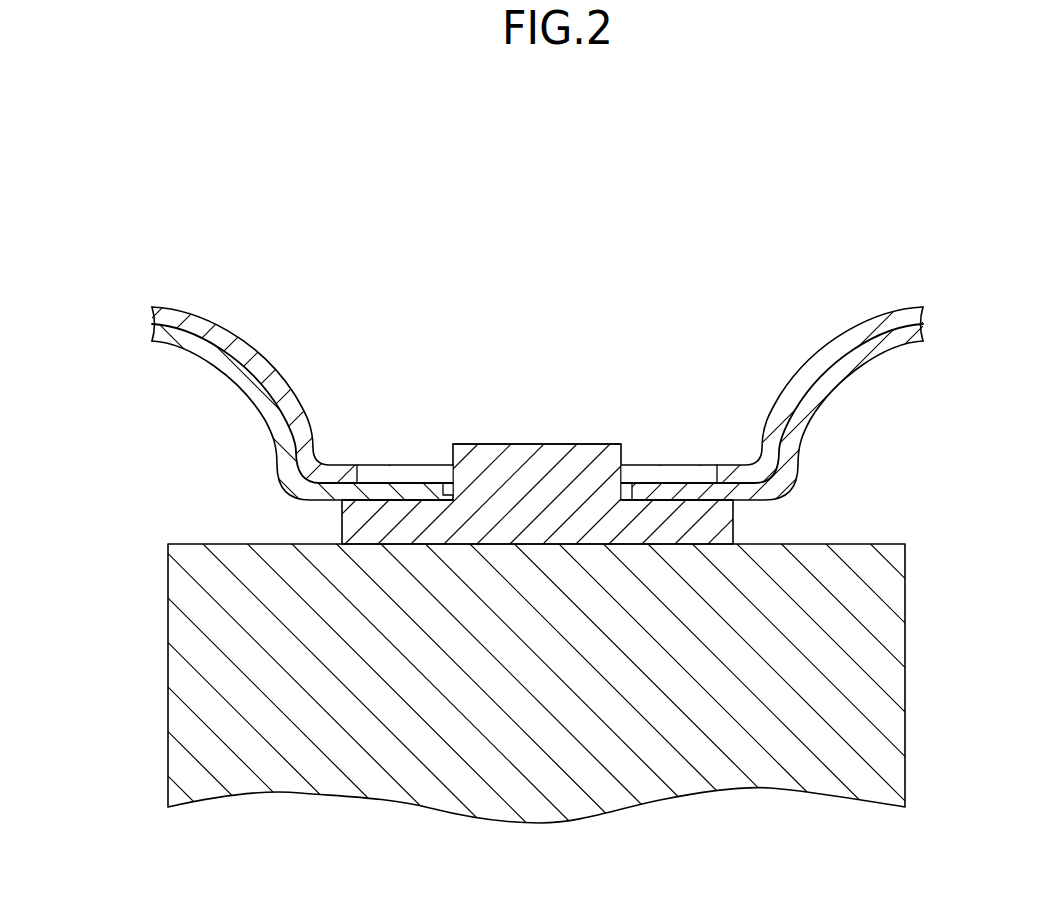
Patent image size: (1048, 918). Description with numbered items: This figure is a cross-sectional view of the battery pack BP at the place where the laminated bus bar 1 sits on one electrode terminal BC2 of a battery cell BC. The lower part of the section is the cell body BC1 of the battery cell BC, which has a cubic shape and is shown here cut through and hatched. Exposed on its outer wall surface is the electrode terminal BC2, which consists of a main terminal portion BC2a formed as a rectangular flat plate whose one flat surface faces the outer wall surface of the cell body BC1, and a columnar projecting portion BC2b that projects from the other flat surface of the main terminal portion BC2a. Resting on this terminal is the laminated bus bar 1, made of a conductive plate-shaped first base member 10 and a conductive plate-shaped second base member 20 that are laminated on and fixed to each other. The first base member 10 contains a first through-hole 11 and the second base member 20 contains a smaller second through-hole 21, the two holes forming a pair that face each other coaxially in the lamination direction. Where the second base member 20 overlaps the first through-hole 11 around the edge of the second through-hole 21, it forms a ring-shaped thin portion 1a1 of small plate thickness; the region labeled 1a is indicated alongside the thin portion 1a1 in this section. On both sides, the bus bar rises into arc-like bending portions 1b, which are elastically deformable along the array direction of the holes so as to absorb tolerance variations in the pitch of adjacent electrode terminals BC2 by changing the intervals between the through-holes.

The battery pack BP is at (473, 164).
The laminated bus bar 1 is at (1005, 270).
The first base member 10 is at (943, 309).
The second base member 20 is at (943, 335).
The bending portion 1b is at (216, 317).
The bottom portion 1a is at (670, 418).
The thin portion 1a1 is at (671, 466).
The first through-hole 11 is at (397, 478).
The second through-hole 21 is at (446, 492).
The battery cell BC is at (141, 630).
The cell body BC1 is at (288, 765).
The electrode terminal BC2 is at (635, 292).
The main terminal portion BC2a is at (643, 510).
The projecting portion BC2b is at (540, 443).